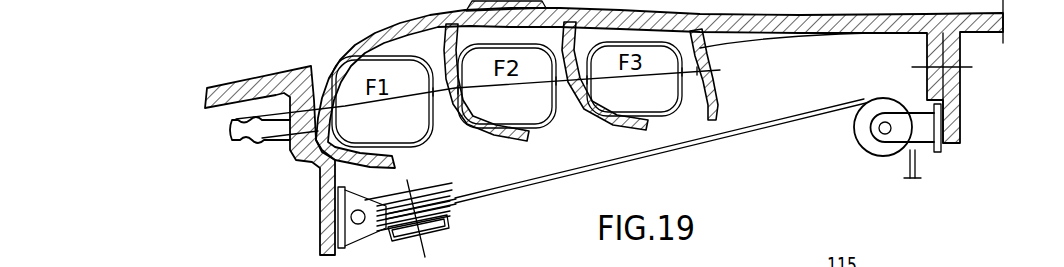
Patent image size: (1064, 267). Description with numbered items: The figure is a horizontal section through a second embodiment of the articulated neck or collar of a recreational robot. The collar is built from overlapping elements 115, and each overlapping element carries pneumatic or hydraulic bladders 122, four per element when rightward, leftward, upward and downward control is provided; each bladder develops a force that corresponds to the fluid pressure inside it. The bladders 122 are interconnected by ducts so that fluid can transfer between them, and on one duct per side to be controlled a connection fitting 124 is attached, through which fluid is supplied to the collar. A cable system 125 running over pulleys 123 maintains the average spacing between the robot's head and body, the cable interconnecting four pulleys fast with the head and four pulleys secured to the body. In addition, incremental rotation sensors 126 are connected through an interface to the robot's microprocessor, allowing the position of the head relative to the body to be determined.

The overlapping elements 115 is at (381, 43).
The pneumatic or hydraulic bladders 122 is at (464, 5).
The pulleys 123 is at (448, 187).
The connection fitting 124 is at (262, 132).
The cable system 125 is at (648, 168).
The incremental rotation sensors 126 is at (448, 219).